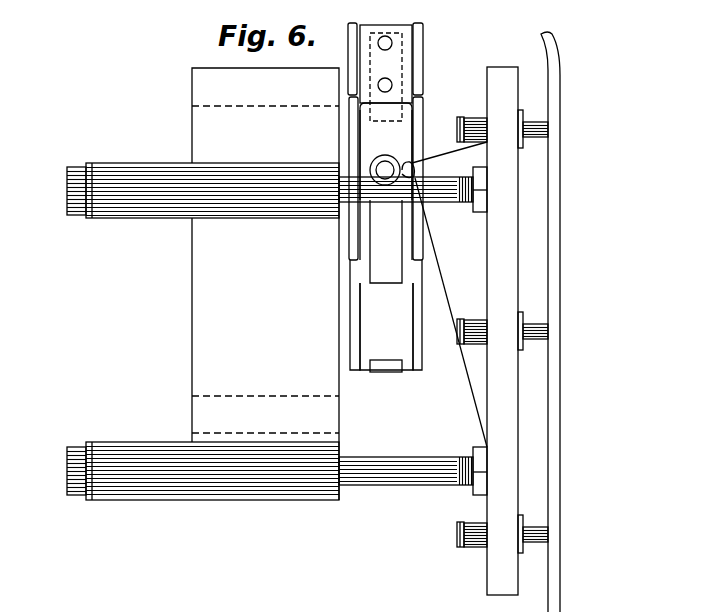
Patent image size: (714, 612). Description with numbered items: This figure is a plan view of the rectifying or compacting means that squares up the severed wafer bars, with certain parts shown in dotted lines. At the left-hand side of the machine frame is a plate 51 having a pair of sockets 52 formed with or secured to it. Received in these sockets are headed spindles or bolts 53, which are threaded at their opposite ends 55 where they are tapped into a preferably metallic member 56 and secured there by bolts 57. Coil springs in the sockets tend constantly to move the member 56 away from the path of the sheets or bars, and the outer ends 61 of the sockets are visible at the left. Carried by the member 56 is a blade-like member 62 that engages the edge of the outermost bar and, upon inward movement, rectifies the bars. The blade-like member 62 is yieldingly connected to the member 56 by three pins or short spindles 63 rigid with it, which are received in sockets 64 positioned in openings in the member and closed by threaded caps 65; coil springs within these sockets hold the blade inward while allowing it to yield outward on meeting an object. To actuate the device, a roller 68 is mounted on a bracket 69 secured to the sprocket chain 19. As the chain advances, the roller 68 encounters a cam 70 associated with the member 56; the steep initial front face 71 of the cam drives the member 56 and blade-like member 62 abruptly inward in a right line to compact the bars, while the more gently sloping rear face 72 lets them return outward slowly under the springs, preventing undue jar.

The sprocket chain 19 is at (350, 328).
The plate 51 is at (192, 333).
The socket 52 is at (155, 164).
The spindle or bolt 53 is at (340, 214).
The threaded end 55 is at (474, 207).
The member 56 is at (502, 396).
The bolt 57 is at (476, 495).
The shaft end 61 is at (67, 189).
The blade-like member 62 is at (560, 447).
The pin or short spindle 63 is at (545, 122).
The socket 64 is at (475, 117).
The threaded cap 65 is at (458, 124).
The roller 68 is at (388, 156).
The bracket 69 is at (360, 136).
The cam 70 is at (440, 298).
The front face 71 is at (446, 156).
The rear face 72 is at (467, 375).